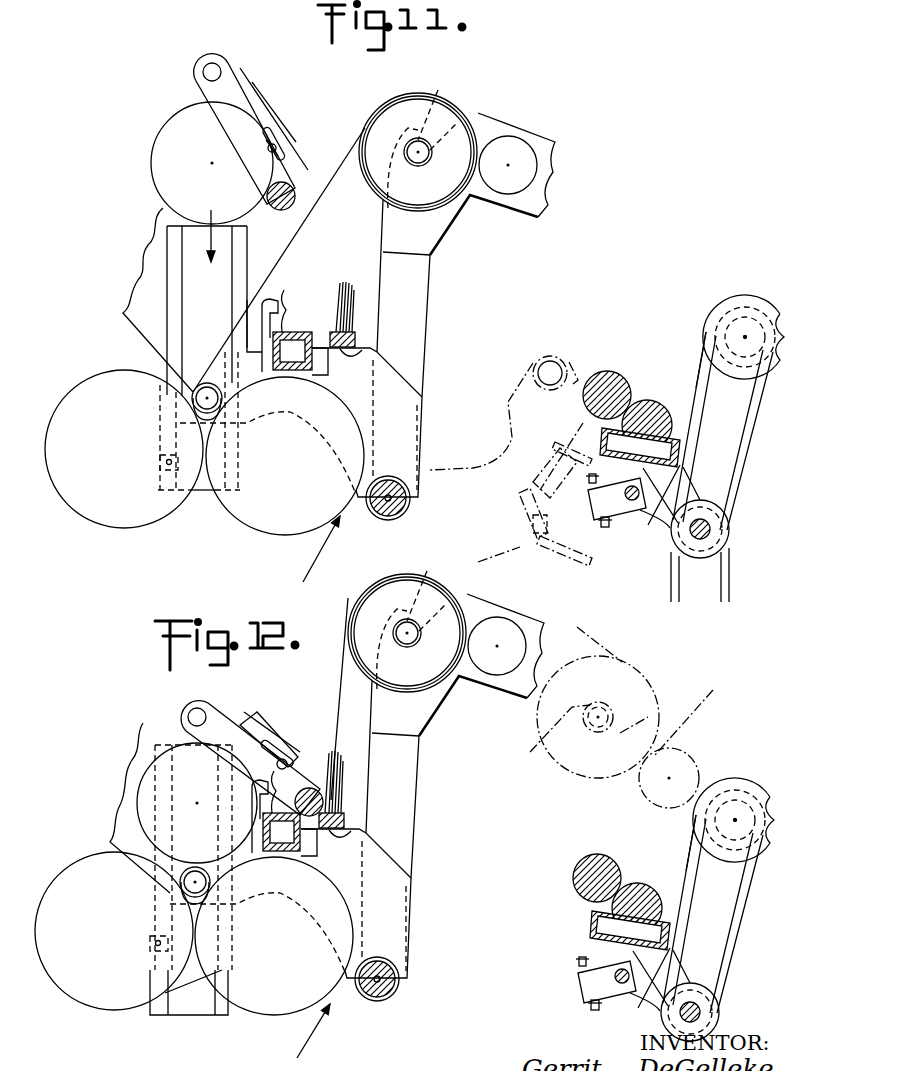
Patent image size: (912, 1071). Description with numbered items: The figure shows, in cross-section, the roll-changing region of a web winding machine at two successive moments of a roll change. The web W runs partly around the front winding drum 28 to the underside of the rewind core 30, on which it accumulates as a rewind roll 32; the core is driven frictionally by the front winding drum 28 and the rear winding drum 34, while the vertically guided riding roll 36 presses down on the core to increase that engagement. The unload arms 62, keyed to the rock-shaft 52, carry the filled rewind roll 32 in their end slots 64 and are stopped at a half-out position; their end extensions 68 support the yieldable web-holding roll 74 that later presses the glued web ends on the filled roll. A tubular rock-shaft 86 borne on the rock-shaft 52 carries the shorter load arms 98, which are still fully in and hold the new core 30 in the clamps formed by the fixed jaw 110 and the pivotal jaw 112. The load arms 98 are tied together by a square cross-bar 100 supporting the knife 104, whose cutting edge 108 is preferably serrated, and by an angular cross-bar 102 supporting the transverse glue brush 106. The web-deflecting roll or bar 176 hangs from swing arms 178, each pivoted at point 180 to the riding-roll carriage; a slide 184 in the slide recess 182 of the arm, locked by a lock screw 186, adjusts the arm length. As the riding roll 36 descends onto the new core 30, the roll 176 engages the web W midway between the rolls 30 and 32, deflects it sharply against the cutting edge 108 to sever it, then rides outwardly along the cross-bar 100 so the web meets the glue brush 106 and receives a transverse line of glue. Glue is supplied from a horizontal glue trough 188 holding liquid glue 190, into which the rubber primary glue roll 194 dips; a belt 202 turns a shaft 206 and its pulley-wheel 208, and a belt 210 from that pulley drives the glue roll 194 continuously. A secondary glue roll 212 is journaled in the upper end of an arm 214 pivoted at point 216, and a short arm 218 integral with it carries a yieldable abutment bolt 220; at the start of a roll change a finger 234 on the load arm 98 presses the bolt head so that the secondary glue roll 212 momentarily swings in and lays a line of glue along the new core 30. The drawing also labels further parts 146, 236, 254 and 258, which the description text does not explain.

In FIG. 11, the front winding drum 28 is at (242, 518).
In FIG. 12, the front winding drum 28 is at (263, 1005).
In FIG. 11, the rewind core 30 is at (193, 392).
In FIG. 12, the rewind core 30 is at (212, 884).
In FIG. 11, the rewind roll 32 is at (452, 112).
In FIG. 12, the rewind roll 32 is at (388, 633).
In FIG. 11, the rear winding drum 34 is at (73, 493).
In FIG. 12, the rear winding drum 34 is at (72, 990).
In FIG. 11, the riding roll 36 is at (186, 184).
In FIG. 12, the riding roll 36 is at (142, 793).
In FIG. 11, the rock-shaft 52 is at (410, 512).
In FIG. 12, the rock-shaft 52 is at (386, 989).
In FIG. 11, the unload arms 62 is at (428, 283).
In FIG. 12, the unload arms 62 is at (410, 779).
In FIG. 11, the slots 64 is at (422, 137).
In FIG. 12, the slots 64 is at (412, 618).
In FIG. 11, the end extensions 68 is at (510, 207).
In FIG. 12, the end extensions 68 is at (481, 665).
In FIG. 11, the web-holding roll 74 is at (530, 166).
In FIG. 12, the web-holding roll 74 is at (585, 703).
In FIG. 11, the tubular rock-shaft 86 is at (380, 516).
In FIG. 12, the tubular rock-shaft 86 is at (369, 1005).
In FIG. 11, the load arms 98 is at (364, 383).
In FIG. 12, the load arms 98 is at (382, 903).
In FIG. 11, the cross-bar 100 is at (304, 333).
In FIG. 12, the cross-bar 100 is at (265, 832).
In FIG. 11, the cross-bar 102 is at (380, 357).
In FIG. 12, the cross-bar 102 is at (386, 839).
In FIG. 11, the knife 104 is at (284, 290).
In FIG. 12, the knife 104 is at (290, 862).
In FIG. 11, the glue brush 106 is at (350, 292).
In FIG. 12, the glue brush 106 is at (343, 774).
In FIG. 11, the cutting edge 108 is at (258, 322).
In FIG. 12, the cutting edge 108 is at (258, 812).
In FIG. 11, the fixed jaw 110 is at (212, 383).
In FIG. 12, the fixed jaw 110 is at (182, 874).
In FIG. 11, the pivotal jaw 112 is at (203, 424).
In FIG. 12, the pivotal jaw 112 is at (196, 906).
In FIG. 11, the channel support 146 is at (160, 313).
In FIG. 12, the channel support 146 is at (152, 1017).
In FIG. 11, the web-deflecting roll or bar 176 is at (289, 190).
In FIG. 12, the web-deflecting roll or bar 176 is at (312, 786).
In FIG. 11, the swing arm 178 is at (216, 93).
In FIG. 12, the swing arm 178 is at (215, 708).
In FIG. 11, the pivot point 180 is at (210, 73).
In FIG. 12, the pivot point 180 is at (195, 717).
In FIG. 11, the slide recess 182 is at (254, 92).
In FIG. 12, the slide recess 182 is at (251, 712).
In FIG. 11, the slide 184 is at (284, 160).
In FIG. 12, the slide 184 is at (276, 736).
In FIG. 11, the lock screw 186 is at (281, 145).
In FIG. 12, the lock screw 186 is at (285, 758).
In FIG. 11, the glue trough 188 is at (662, 500).
In FIG. 12, the glue trough 188 is at (614, 959).
In FIG. 11, the liquid glue 190 is at (695, 392).
In FIG. 12, the liquid glue 190 is at (658, 921).
In FIG. 11, the primary glue roll 194 is at (652, 408).
In FIG. 12, the primary glue roll 194 is at (649, 892).
In FIG. 11, the belt 202 is at (722, 588).
In FIG. 11, the shaft 206 is at (712, 529).
In FIG. 12, the shaft 206 is at (725, 1016).
In FIG. 11, the pulley-wheel 208 is at (716, 550).
In FIG. 12, the pulley-wheel 208 is at (716, 1012).
In FIG. 11, the belt 210 is at (699, 474).
In FIG. 12, the belt 210 is at (698, 910).
In FIG. 11, the secondary glue roll 212 is at (620, 368).
In FIG. 12, the secondary glue roll 212 is at (598, 863).
In FIG. 11, the arm 214 is at (588, 430).
In FIG. 12, the arm 214 is at (562, 952).
In FIG. 11, the pivot point 216 is at (641, 526).
In FIG. 12, the pivot point 216 is at (621, 1014).
In FIG. 11, the short arm 218 is at (600, 503).
In FIG. 12, the short arm 218 is at (584, 982).
In FIG. 11, the abutment bolt 220 is at (603, 528).
In FIG. 12, the abutment bolt 220 is at (572, 1020).
In FIG. 11, the finger 234 is at (245, 300).
In FIG. 11, the pulley 236 is at (713, 320).
In FIG. 12, the pulley 236 is at (733, 796).
In FIG. 11, the belt strand 254 is at (750, 470).
In FIG. 12, the belt strand 254 is at (742, 923).
In FIG. 11, the axis 258 is at (750, 324).
In FIG. 12, the axis 258 is at (722, 783).
In FIG. 11, the web W is at (300, 224).
In FIG. 12, the web W is at (341, 677).